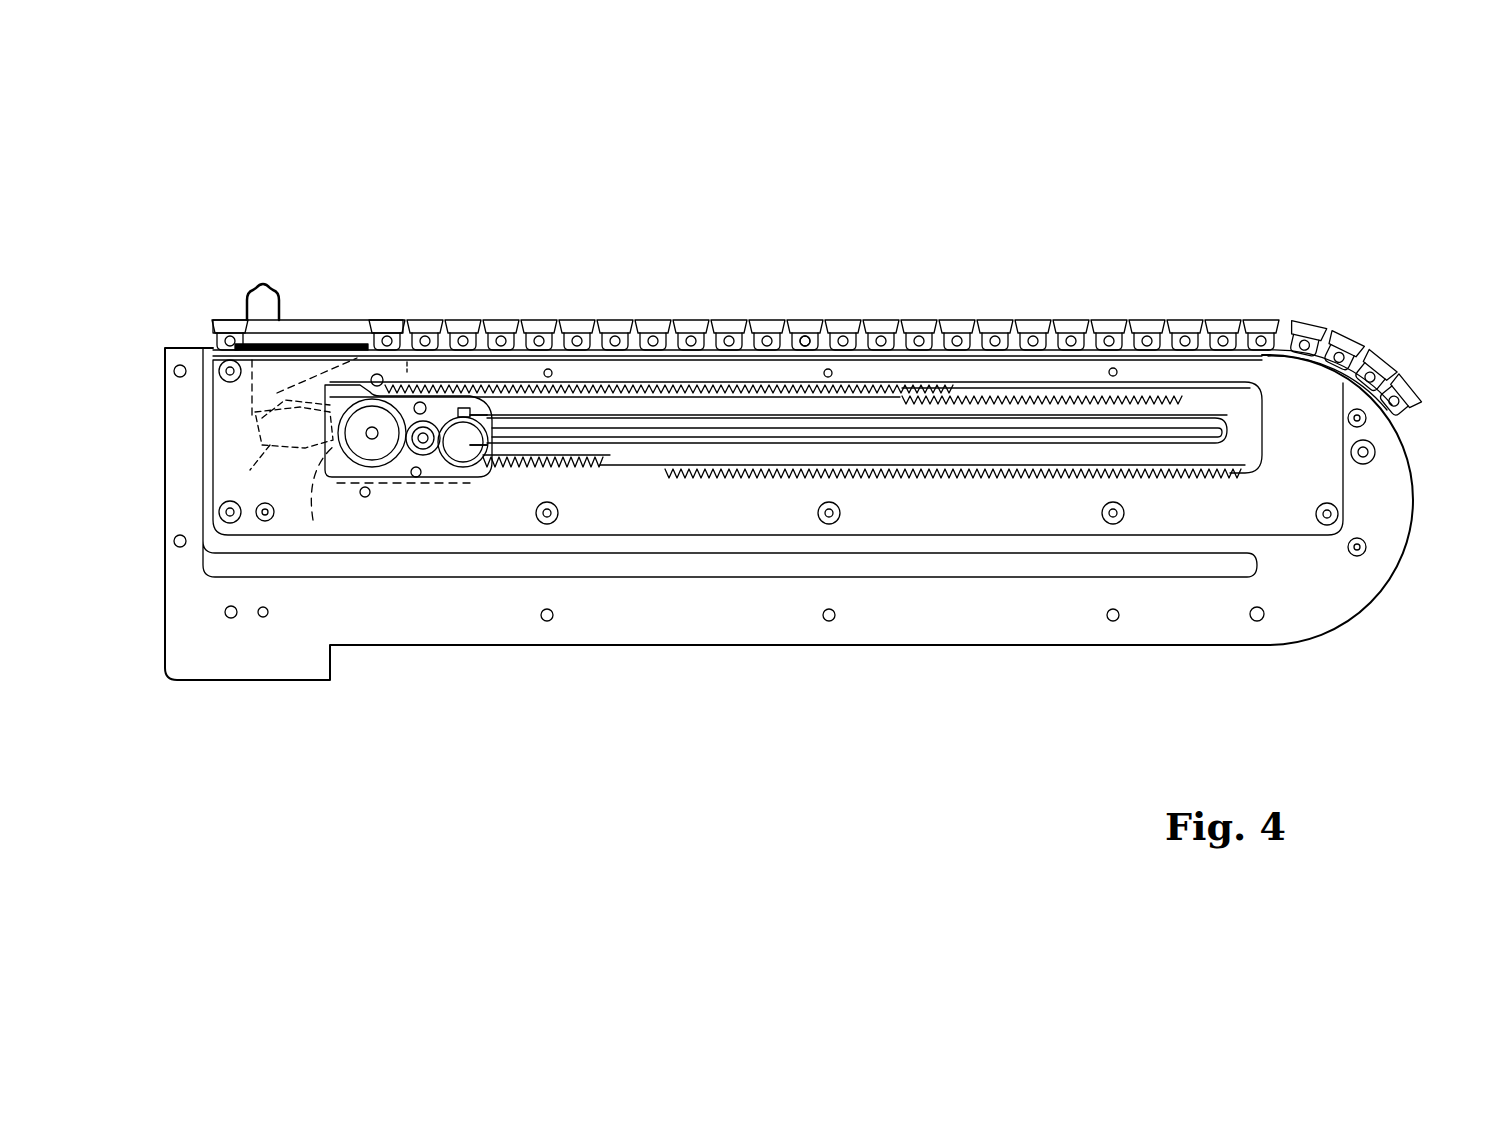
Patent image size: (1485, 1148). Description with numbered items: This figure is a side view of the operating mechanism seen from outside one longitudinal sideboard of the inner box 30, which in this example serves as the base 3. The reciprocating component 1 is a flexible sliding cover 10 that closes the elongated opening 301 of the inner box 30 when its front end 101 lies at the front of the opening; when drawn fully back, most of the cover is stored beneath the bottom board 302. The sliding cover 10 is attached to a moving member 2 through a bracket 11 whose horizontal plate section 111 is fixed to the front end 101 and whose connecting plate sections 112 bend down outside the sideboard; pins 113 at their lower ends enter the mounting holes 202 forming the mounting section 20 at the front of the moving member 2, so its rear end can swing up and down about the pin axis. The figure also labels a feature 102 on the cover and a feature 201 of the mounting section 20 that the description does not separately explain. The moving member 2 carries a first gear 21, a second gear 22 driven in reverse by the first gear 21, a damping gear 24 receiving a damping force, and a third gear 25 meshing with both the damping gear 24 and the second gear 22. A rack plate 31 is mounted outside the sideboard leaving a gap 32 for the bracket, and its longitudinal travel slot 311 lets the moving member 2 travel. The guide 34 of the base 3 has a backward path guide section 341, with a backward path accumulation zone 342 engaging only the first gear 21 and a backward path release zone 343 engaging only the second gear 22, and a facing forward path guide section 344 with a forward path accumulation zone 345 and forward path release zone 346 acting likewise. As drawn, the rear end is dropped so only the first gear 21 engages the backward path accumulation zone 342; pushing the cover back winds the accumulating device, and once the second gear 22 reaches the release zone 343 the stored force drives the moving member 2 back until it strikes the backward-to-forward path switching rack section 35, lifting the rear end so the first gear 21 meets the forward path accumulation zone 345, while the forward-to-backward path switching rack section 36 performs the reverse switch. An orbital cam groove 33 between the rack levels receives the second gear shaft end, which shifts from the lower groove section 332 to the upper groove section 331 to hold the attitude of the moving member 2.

The reciprocating component 1 is at (786, 477).
The sliding cover 10 is at (801, 307).
The front end 101 is at (300, 320).
The protrusion of chain 102 is at (262, 286).
The bracket 11 is at (256, 328).
The horizontal plate section 111 is at (320, 345).
The connecting plate sections 112 is at (222, 348).
The pins 113 is at (248, 420).
The moving member 2 is at (351, 534).
The mounting section 20 is at (251, 605).
The lever first arm 201 is at (296, 409).
The mounting holes 202 is at (260, 457).
The first gear 21 is at (345, 470).
The second gear 22 is at (360, 495).
The damping gear 24 is at (463, 447).
The third gear 25 is at (430, 455).
The base 3 is at (814, 444).
The inner box 30 is at (811, 450).
The opening 301 is at (805, 335).
The bottom board 302 is at (680, 578).
The rack plate 31 is at (838, 383).
The travel slots 311 is at (712, 410).
The gap 32 is at (407, 370).
The cam grooves 33 is at (696, 585).
The lower groove sections 332 is at (478, 430).
The upper groove sections 331 is at (858, 422).
The guide 34 is at (796, 481).
The backward path guide section 341 is at (862, 609).
The backward path accumulation zone 342 is at (546, 461).
The backward path release zone 343 is at (953, 473).
The forward path guide section 344 is at (783, 302).
The forward path accumulation zone 345 is at (1042, 400).
The forward path release zone 346 is at (669, 389).
The backward-to-forward path switching rack section 35 is at (1347, 470).
The forward-to-backward path switching rack section 36 is at (293, 470).